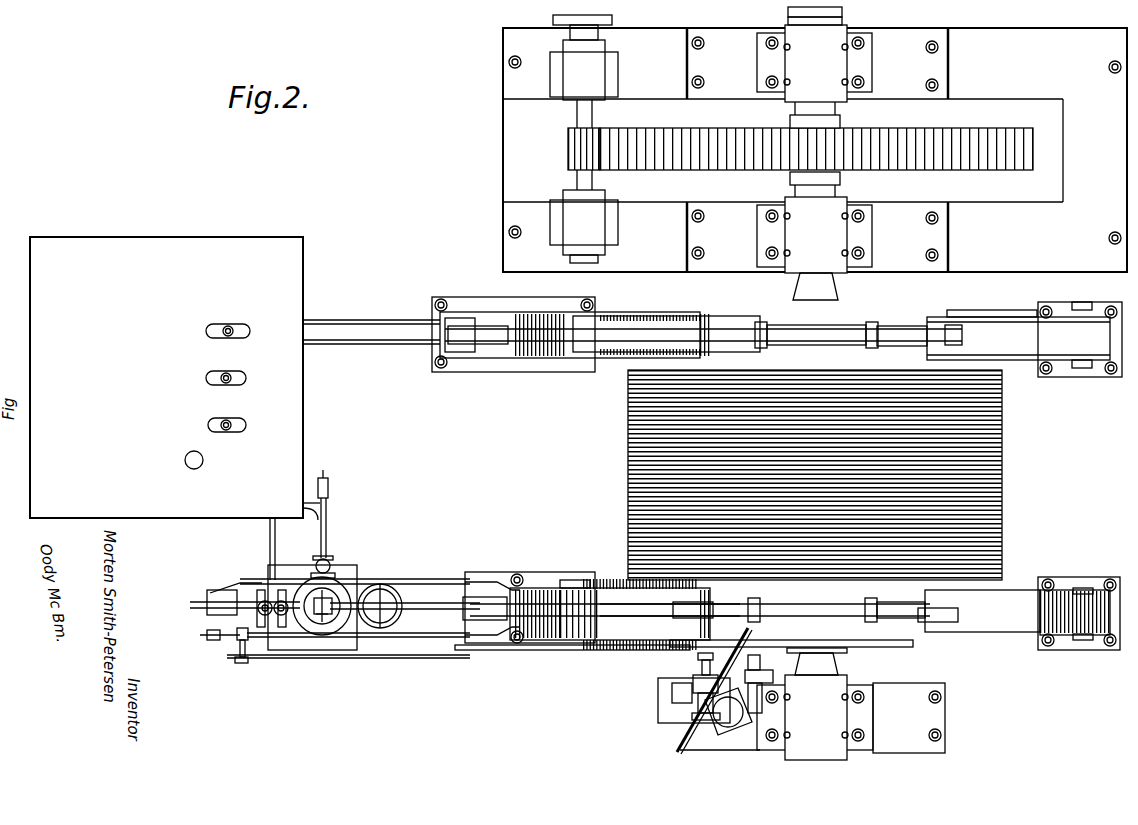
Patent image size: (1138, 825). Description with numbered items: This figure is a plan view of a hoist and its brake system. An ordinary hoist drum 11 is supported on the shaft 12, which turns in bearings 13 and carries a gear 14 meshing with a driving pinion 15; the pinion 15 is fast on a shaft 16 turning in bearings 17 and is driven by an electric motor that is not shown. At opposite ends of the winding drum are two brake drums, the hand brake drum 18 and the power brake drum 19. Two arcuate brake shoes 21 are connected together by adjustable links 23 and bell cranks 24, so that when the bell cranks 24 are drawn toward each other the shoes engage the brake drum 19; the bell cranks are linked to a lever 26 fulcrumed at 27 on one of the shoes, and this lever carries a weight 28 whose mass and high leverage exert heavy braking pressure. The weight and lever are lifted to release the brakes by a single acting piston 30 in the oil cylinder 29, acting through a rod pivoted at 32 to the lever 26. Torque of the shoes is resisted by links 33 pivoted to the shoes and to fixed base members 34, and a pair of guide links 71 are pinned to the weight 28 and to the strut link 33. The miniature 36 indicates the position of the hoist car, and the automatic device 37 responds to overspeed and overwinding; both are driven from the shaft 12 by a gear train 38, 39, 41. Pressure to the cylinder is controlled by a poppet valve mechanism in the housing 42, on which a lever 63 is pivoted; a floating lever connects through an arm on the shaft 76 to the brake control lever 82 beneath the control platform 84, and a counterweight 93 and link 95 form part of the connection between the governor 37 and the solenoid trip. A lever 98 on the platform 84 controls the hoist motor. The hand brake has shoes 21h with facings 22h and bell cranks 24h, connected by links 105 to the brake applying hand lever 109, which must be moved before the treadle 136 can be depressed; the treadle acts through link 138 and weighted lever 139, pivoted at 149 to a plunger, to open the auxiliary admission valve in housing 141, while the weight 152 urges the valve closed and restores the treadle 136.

The hoist drum 11 is at (998, 470).
The shaft 12 is at (800, 290).
The bearings 13 is at (851, 383).
The gear 14 is at (705, 138).
The driving pinion 15 is at (580, 148).
The shaft 16 is at (582, 116).
The bearings 17 is at (584, 139).
The hand brake drum 18 is at (882, 320).
The power brake drum 19 is at (908, 646).
The brake shoes 21 is at (535, 642).
The brake shoes 21h is at (600, 320).
The facings 22h is at (990, 318).
The adjustable links 23 is at (798, 612).
The bell cranks 24 is at (485, 605).
The bell cranks 24h is at (652, 335).
The lever 26 is at (410, 600).
The fulcrum 27 is at (470, 620).
The weight 28 is at (372, 628).
The oil cylinder 29 is at (325, 620).
The piston 30 is at (345, 595).
The pivot 32 is at (320, 618).
The links 33 is at (555, 590).
The base members 34 is at (565, 645).
The miniature 36 is at (726, 720).
The automatic device 37 is at (668, 705).
The gear train 38 is at (847, 652).
The gear train 39 is at (766, 683).
The gear train 41 is at (665, 652).
The housing 42 is at (248, 574).
The lever 63 is at (207, 609).
The guide links 71 is at (430, 578).
The shaft 76 is at (270, 541).
The brake control lever 82 is at (237, 421).
The control platform 84 is at (166, 377).
The counterweight 93 is at (212, 641).
The link 95 is at (272, 660).
The lever 98 is at (235, 373).
The links 105 is at (368, 340).
The brake applying hand lever 109 is at (235, 326).
The treadle 136 is at (192, 461).
The link 138 is at (303, 503).
The weighted lever 139 is at (327, 525).
The housing 141 is at (315, 568).
The pivot 149 is at (335, 565).
The weight 152 is at (328, 488).